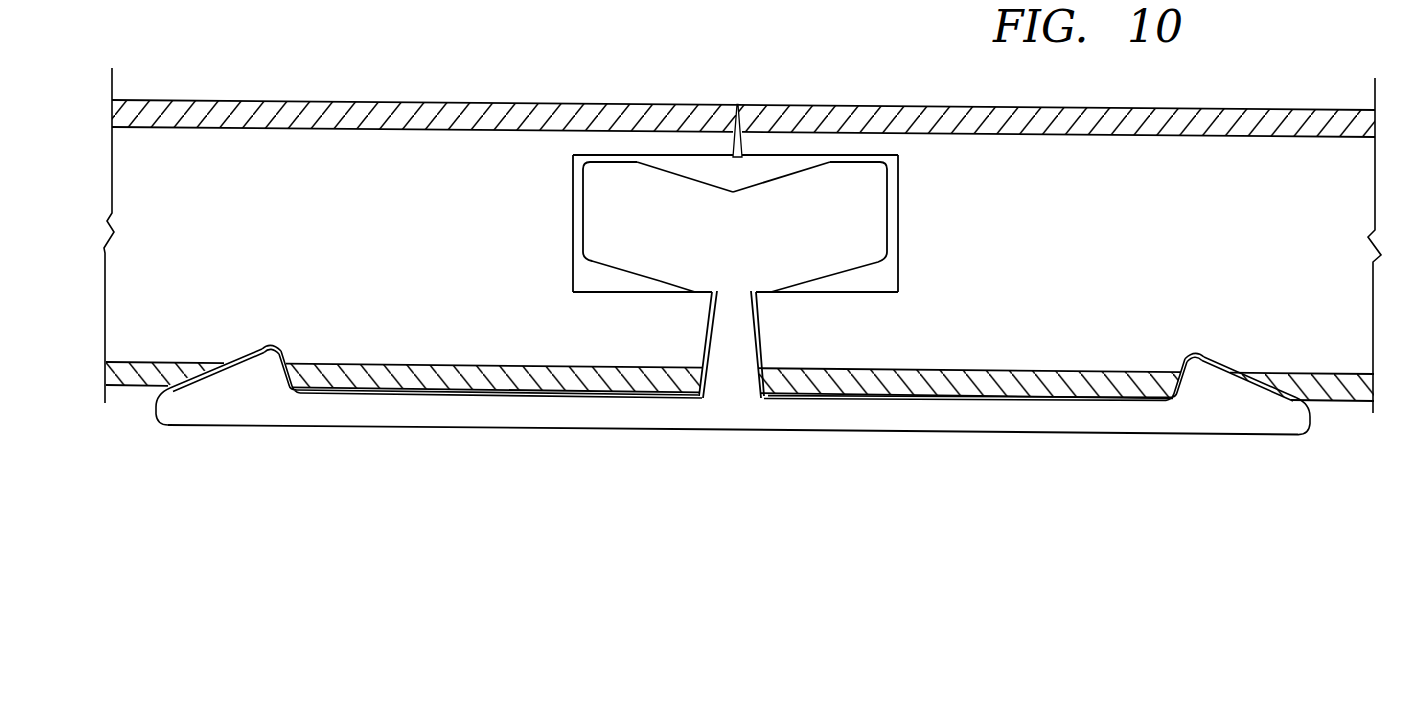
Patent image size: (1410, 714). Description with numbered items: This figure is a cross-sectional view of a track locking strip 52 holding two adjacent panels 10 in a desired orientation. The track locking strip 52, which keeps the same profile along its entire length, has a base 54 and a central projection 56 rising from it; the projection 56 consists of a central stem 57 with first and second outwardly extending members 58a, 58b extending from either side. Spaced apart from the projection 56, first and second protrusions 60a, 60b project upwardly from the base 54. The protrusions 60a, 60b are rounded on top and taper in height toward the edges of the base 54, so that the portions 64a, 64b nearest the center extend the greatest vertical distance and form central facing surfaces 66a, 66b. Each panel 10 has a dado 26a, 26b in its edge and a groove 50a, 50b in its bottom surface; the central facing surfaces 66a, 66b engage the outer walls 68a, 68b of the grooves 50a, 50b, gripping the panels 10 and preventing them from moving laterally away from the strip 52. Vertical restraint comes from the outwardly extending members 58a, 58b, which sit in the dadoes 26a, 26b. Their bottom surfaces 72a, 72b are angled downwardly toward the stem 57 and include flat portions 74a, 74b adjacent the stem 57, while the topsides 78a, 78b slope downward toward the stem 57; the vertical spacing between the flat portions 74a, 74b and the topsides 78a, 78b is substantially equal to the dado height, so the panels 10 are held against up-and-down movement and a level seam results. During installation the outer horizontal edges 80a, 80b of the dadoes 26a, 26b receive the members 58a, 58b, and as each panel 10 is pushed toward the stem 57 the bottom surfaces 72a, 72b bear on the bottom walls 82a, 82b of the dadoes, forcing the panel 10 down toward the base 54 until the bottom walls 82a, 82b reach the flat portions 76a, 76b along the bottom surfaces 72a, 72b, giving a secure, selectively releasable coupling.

The panel 10 is at (743, 98).
The dado 26a is at (642, 133).
The dado 26b is at (836, 133).
The groove 50a is at (425, 369).
The groove 50b is at (1043, 371).
The track locking strip 52 is at (540, 446).
The base 54 is at (912, 433).
The projection 56 is at (739, 261).
The central stem 57 is at (729, 366).
The first outwardly extending member 58a is at (573, 200).
The second outwardly extending member 58b is at (898, 203).
The first protrusion 60a is at (237, 357).
The second protrusion 60b is at (1220, 357).
The portion 64a is at (263, 358).
The portion 64b is at (1201, 365).
The central facing surface 66a is at (287, 372).
The central facing surface 66b is at (1183, 388).
The outer wall 68a is at (295, 384).
The outer wall 68b is at (1170, 384).
The bottom surface 72a is at (625, 289).
The bottom surface 72b is at (856, 282).
The flat portion 74a is at (696, 275).
The flat portion 74b is at (762, 275).
The flat portion 76a is at (607, 157).
The flat portion 76b is at (863, 157).
The topside 78a is at (658, 168).
The topside 78b is at (800, 175).
The outer edge 80a is at (697, 345).
The outer edge 80b is at (806, 398).
The bottom wall 82a is at (571, 294).
The bottom wall 82b is at (896, 294).